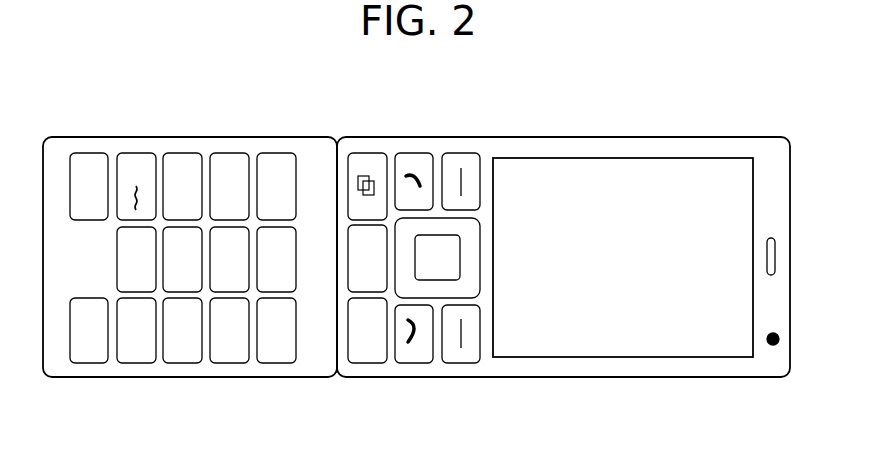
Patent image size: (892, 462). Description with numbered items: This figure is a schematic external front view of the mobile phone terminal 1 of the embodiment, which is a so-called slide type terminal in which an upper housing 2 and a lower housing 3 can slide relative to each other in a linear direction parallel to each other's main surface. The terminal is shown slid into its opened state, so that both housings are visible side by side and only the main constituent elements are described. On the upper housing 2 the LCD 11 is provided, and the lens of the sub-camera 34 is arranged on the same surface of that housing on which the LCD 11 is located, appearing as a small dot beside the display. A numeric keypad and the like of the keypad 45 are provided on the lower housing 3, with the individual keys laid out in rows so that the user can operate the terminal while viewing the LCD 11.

The mobile phone terminal 1 is at (524, 82).
The upper housing 2 is at (553, 137).
The lower housing 3 is at (200, 137).
The LCD 11 is at (634, 358).
The sub-camera 34 is at (772, 346).
The keypad 45 is at (249, 368).